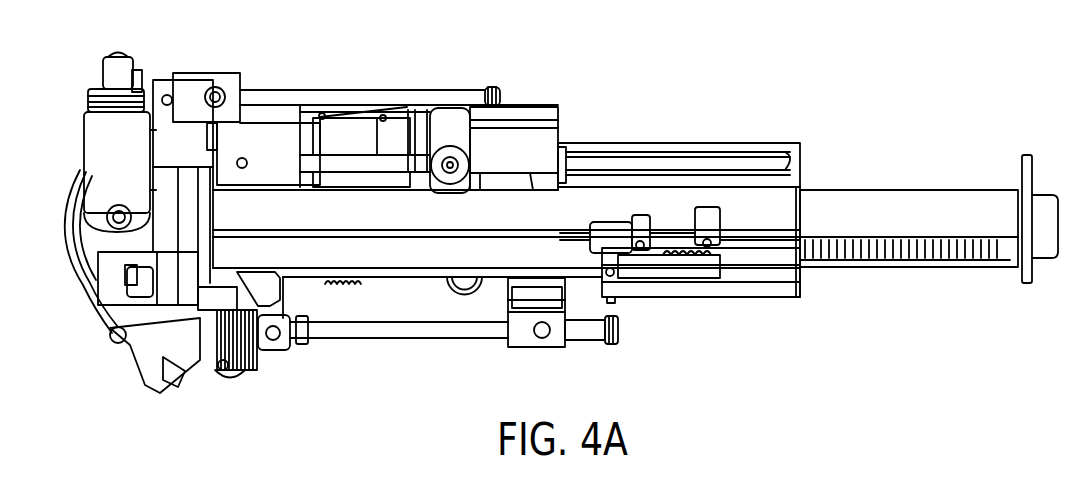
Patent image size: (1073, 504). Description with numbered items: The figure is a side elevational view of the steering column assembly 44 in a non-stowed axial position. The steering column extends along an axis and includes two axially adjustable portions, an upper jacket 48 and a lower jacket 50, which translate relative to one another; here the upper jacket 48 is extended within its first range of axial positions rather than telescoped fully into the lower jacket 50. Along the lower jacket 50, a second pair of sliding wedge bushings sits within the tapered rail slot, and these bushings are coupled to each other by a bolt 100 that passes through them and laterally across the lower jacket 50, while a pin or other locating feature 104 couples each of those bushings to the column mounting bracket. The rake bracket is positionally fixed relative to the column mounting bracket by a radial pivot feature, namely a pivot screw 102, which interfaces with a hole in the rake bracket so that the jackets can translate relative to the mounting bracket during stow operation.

The steering column assembly 44 is at (636, 119).
The upper jacket 48 is at (905, 205).
The lower jacket 50 is at (734, 198).
The bolt 100 is at (246, 158).
The pivot screw 102 is at (452, 162).
The locating feature 104 is at (268, 108).